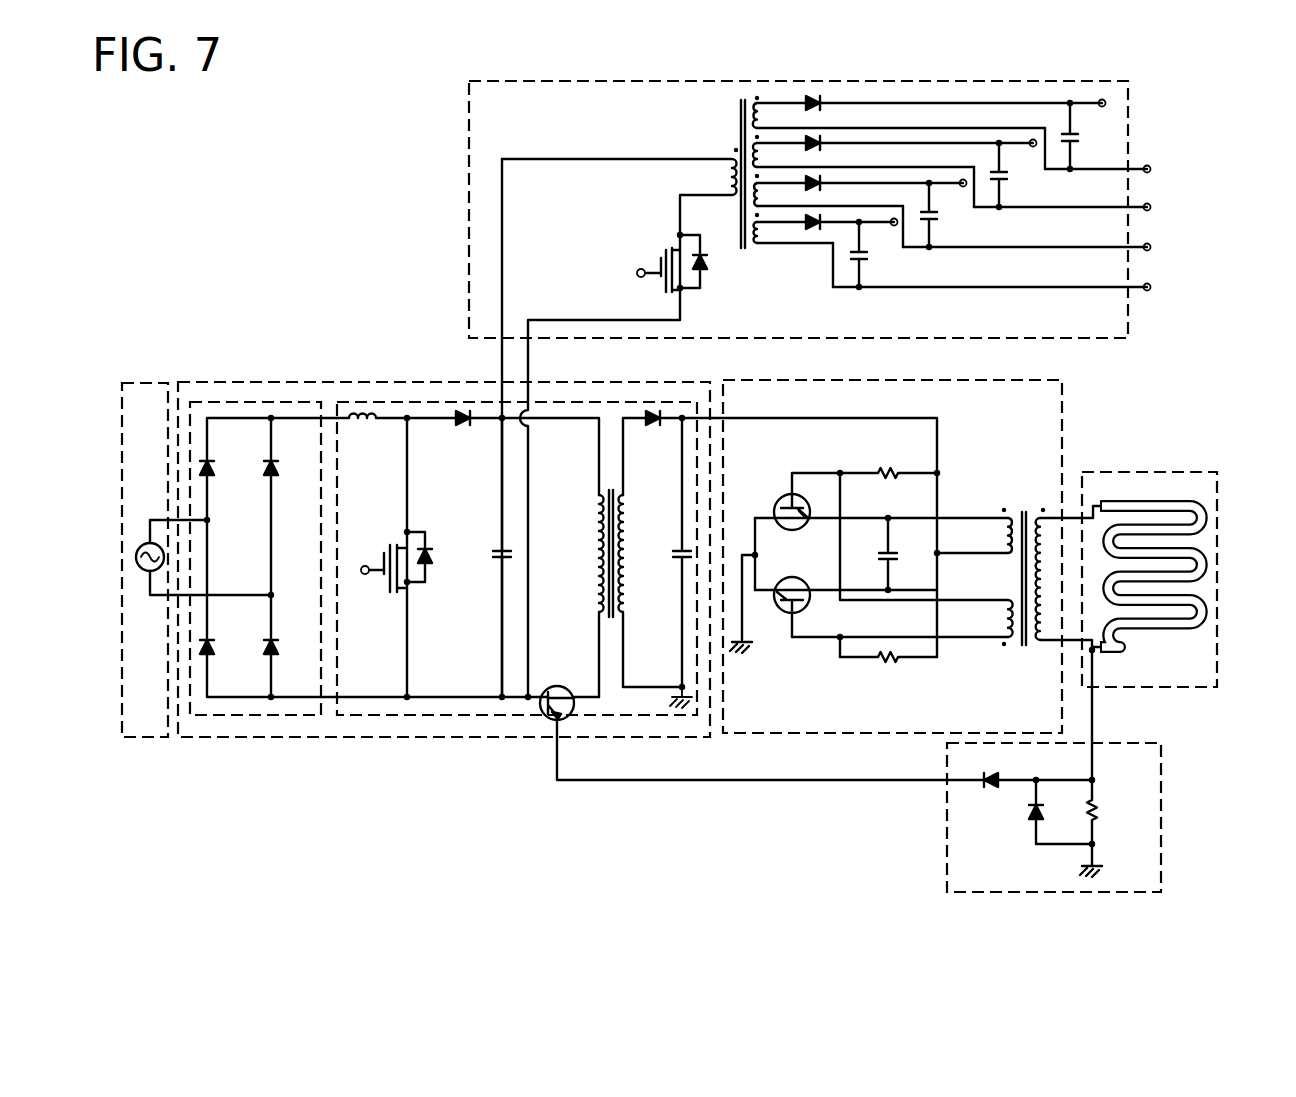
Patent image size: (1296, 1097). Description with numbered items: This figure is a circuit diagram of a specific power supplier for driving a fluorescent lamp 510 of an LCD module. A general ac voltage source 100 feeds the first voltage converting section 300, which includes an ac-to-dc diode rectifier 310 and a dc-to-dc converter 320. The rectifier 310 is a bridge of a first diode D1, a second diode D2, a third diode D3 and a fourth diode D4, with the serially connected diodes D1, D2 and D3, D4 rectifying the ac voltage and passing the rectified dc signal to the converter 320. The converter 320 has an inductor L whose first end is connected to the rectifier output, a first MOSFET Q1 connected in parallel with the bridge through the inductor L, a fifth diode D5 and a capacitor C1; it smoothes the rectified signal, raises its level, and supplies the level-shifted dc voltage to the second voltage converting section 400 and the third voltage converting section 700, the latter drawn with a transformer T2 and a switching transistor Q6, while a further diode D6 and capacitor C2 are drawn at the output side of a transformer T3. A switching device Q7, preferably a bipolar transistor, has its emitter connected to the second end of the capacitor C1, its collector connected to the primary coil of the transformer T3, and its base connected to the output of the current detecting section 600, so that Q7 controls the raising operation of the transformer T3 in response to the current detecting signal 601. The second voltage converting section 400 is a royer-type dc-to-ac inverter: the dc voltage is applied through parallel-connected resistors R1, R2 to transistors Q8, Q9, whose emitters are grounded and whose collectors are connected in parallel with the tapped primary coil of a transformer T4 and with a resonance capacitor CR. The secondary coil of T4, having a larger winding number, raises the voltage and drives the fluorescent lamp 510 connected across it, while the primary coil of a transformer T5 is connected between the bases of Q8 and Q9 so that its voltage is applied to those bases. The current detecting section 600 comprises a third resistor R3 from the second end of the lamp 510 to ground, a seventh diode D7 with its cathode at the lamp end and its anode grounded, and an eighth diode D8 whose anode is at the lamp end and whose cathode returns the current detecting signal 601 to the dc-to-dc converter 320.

The AC power source 100 is at (145, 737).
The first voltage converting section 300 is at (245, 737).
The ac-to-dc diode rectifier 310 is at (253, 402).
The dc-to-dc converter 320 is at (437, 402).
The second voltage converting section 400 is at (1062, 403).
The fluorescent lamp 510 is at (1217, 577).
The current detecting section 600 is at (1161, 817).
The current detecting signal 601 is at (745, 780).
The third voltage converting section 700 is at (822, 81).
The first diode D1 is at (223, 469).
The second diode D2 is at (223, 648).
The third diode D3 is at (287, 469).
The fourth diode D4 is at (287, 648).
The fifth diode D5 is at (461, 436).
The diode D6 is at (655, 436).
The seventh diode D7 is at (1060, 812).
The eighth diode D8 is at (993, 766).
The inductor L is at (372, 437).
The capacitor C1 is at (488, 557).
The capacitor C2 is at (668, 552).
The resonance capacitor CR is at (876, 554).
The first MOSFET Q1 is at (396, 557).
The switching transistor Q6 is at (669, 256).
The switching device Q7 is at (569, 686).
The transistor Q8 is at (797, 509).
The transistor Q9 is at (846, 599).
The resistor R1 is at (888, 461).
The resistor R2 is at (888, 672).
The third resistor R3 is at (1111, 823).
The transformer T2 is at (630, 172).
The transformer T3 is at (623, 557).
The transformer T4 is at (1011, 564).
The transformer T5 is at (994, 637).